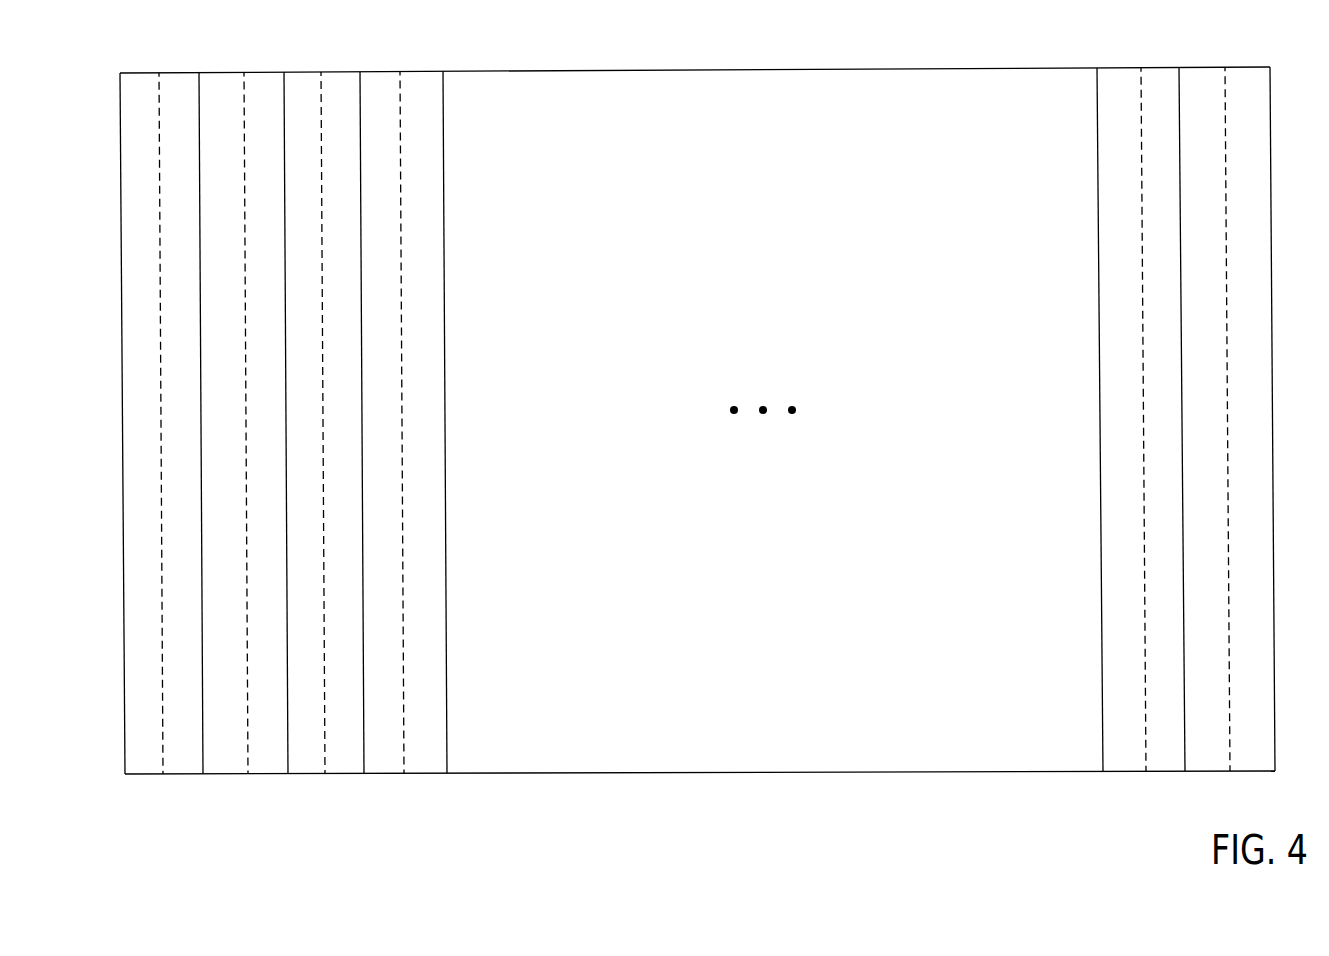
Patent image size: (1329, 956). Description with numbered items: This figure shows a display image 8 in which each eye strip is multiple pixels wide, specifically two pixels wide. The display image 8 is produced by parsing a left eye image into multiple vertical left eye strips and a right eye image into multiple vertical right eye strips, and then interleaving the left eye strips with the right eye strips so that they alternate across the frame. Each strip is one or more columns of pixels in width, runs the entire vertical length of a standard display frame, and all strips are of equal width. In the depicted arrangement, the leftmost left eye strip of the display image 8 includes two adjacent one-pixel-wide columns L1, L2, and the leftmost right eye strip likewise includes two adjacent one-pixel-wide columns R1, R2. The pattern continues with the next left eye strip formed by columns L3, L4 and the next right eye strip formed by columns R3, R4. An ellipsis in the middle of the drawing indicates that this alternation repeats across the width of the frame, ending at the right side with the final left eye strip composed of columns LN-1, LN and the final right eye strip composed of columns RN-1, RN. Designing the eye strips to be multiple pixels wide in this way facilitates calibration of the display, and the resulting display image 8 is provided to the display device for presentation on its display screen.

The display image 8 is at (953, 69).
The left eye strip column L1 is at (135, 423).
The left eye strip column L2 is at (176, 423).
The right eye strip column R1 is at (218, 423).
The right eye strip column R2 is at (263, 422).
The left eye strip column L3 is at (299, 423).
The left eye strip column L4 is at (338, 423).
The right eye strip column R3 is at (377, 423).
The right eye strip column R4 is at (423, 422).
The left eye strip column LN-1 is at (1119, 420).
The left eye strip column LN is at (1157, 420).
The right eye strip column RN-1 is at (1203, 420).
The right eye strip column RN is at (1245, 419).